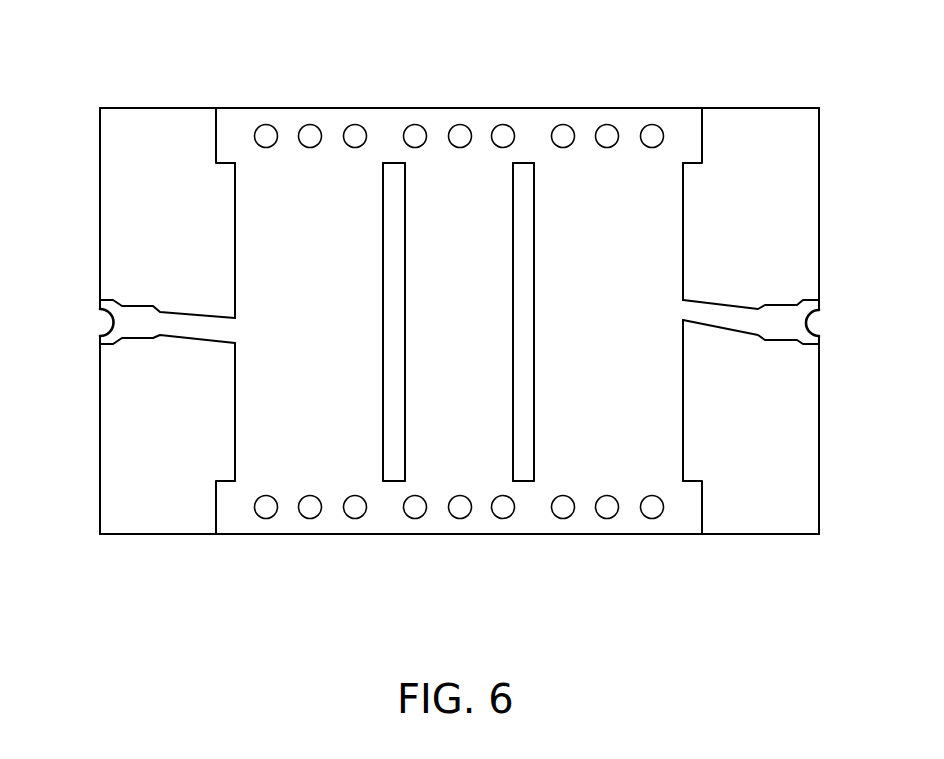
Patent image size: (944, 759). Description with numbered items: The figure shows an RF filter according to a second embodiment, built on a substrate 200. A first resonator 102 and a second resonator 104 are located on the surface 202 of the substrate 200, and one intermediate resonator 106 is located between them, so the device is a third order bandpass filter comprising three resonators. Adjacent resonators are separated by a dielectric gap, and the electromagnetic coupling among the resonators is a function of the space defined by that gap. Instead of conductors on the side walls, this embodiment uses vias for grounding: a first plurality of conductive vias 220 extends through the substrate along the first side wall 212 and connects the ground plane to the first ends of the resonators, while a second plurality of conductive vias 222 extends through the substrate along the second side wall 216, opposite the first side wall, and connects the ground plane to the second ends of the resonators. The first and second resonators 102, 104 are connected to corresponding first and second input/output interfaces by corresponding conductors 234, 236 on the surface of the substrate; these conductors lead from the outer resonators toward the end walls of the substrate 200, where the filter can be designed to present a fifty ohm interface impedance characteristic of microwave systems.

The substrate 200 is at (121, 96).
The surface 202 is at (122, 210).
The second side wall 216 is at (191, 108).
The first side wall 212 is at (192, 534).
The first resonator 102 is at (266, 188).
The second resonator 104 is at (561, 190).
The intermediate resonator 106 is at (414, 190).
The second plurality of conductive vias 222 is at (310, 124).
The first plurality of conductive vias 220 is at (310, 518).
The conductor 234 is at (183, 341).
The conductor 236 is at (717, 328).